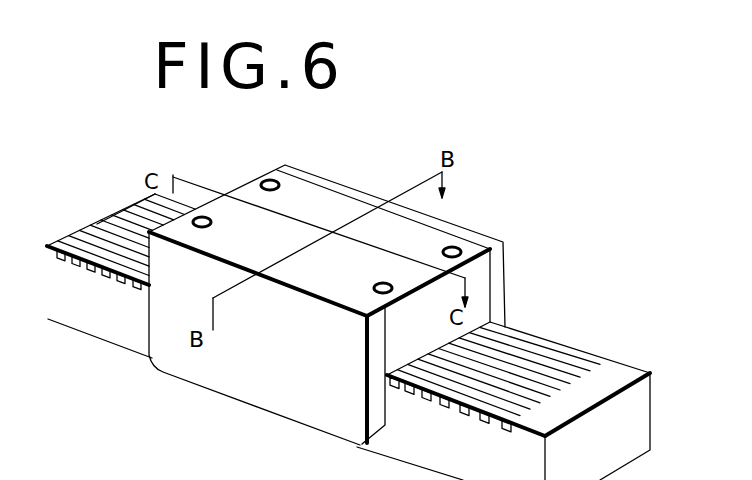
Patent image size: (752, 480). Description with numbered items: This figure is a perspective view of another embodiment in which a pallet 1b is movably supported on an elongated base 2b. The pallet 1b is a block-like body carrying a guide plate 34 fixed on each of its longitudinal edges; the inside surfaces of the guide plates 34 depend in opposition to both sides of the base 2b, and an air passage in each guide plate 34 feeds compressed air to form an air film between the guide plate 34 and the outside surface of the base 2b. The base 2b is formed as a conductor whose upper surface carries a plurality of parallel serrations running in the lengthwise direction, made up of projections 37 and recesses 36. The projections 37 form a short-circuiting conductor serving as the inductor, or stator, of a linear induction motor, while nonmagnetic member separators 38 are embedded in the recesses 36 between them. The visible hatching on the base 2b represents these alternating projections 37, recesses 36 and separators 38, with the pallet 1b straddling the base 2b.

The pallet 1b is at (427, 243).
The guide plate 34 is at (352, 188).
The elongated base 2b is at (613, 377).
The nonmagnetic member separators 38 is at (578, 358).
The projections 37 is at (450, 405).
The recesses 36 is at (483, 420).